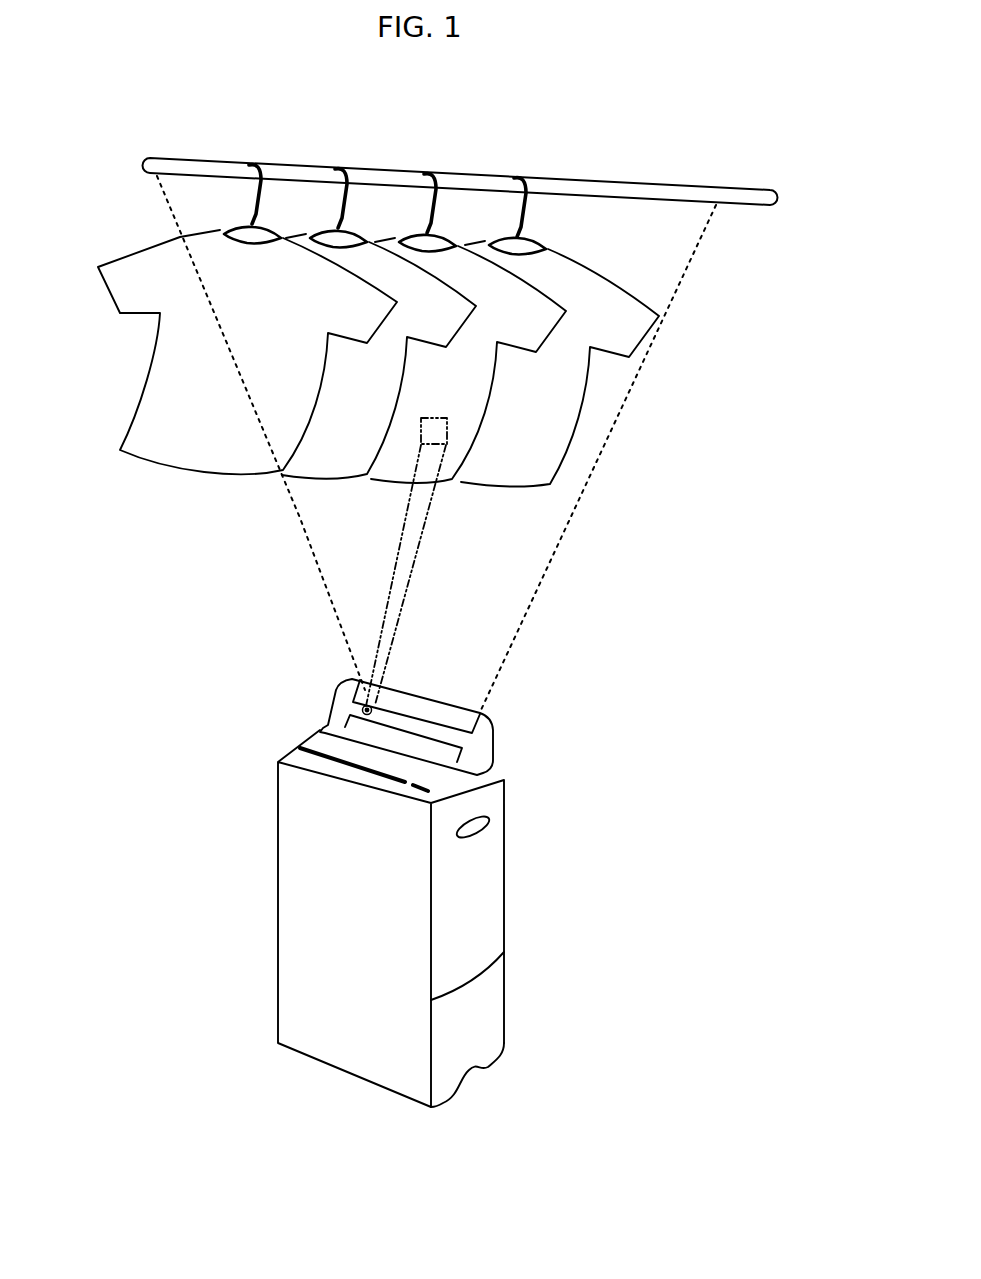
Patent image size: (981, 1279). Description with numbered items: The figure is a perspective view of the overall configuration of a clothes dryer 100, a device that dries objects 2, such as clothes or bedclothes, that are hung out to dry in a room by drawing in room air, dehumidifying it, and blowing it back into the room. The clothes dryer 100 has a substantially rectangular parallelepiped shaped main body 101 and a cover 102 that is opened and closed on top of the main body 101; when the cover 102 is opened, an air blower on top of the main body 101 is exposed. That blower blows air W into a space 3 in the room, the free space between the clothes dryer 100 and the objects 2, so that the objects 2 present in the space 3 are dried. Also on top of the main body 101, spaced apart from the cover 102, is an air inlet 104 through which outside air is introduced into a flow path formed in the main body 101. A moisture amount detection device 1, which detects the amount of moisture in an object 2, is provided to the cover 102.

The moisture amount detection device 1 is at (358, 706).
The objects 2 is at (165, 411).
The space 3 is at (226, 588).
The air W is at (540, 588).
The clothes dryer 100 is at (205, 879).
The main body 101 is at (480, 910).
The cover 102 is at (482, 742).
The air inlet 104 is at (322, 760).